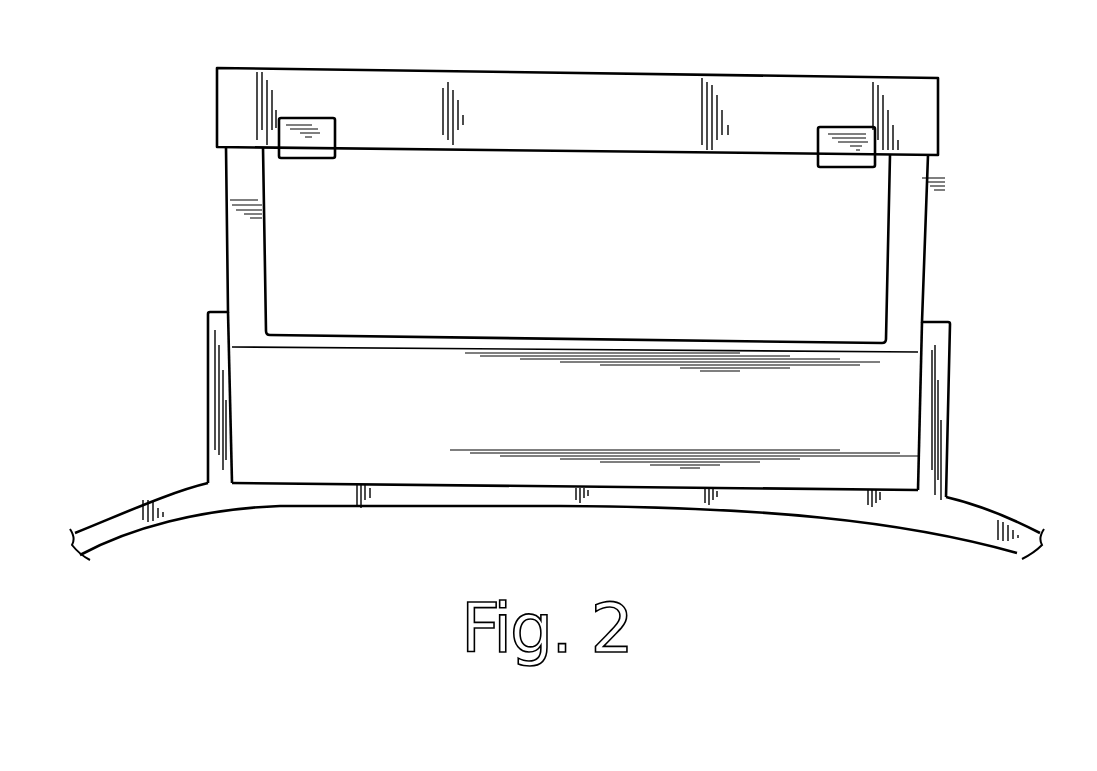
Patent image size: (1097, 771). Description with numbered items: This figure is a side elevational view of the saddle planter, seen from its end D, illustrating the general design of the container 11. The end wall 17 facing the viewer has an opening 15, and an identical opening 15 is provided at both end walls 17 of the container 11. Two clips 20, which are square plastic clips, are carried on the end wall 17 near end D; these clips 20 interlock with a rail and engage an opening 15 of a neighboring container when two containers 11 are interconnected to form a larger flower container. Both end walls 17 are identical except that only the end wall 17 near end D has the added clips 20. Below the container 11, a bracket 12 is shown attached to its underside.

The container 11 is at (466, 70).
The end D is at (685, 115).
The bracket 12 is at (951, 345).
The opening 15 is at (570, 227).
The end wall 17 is at (430, 367).
The clips 20 is at (335, 160).